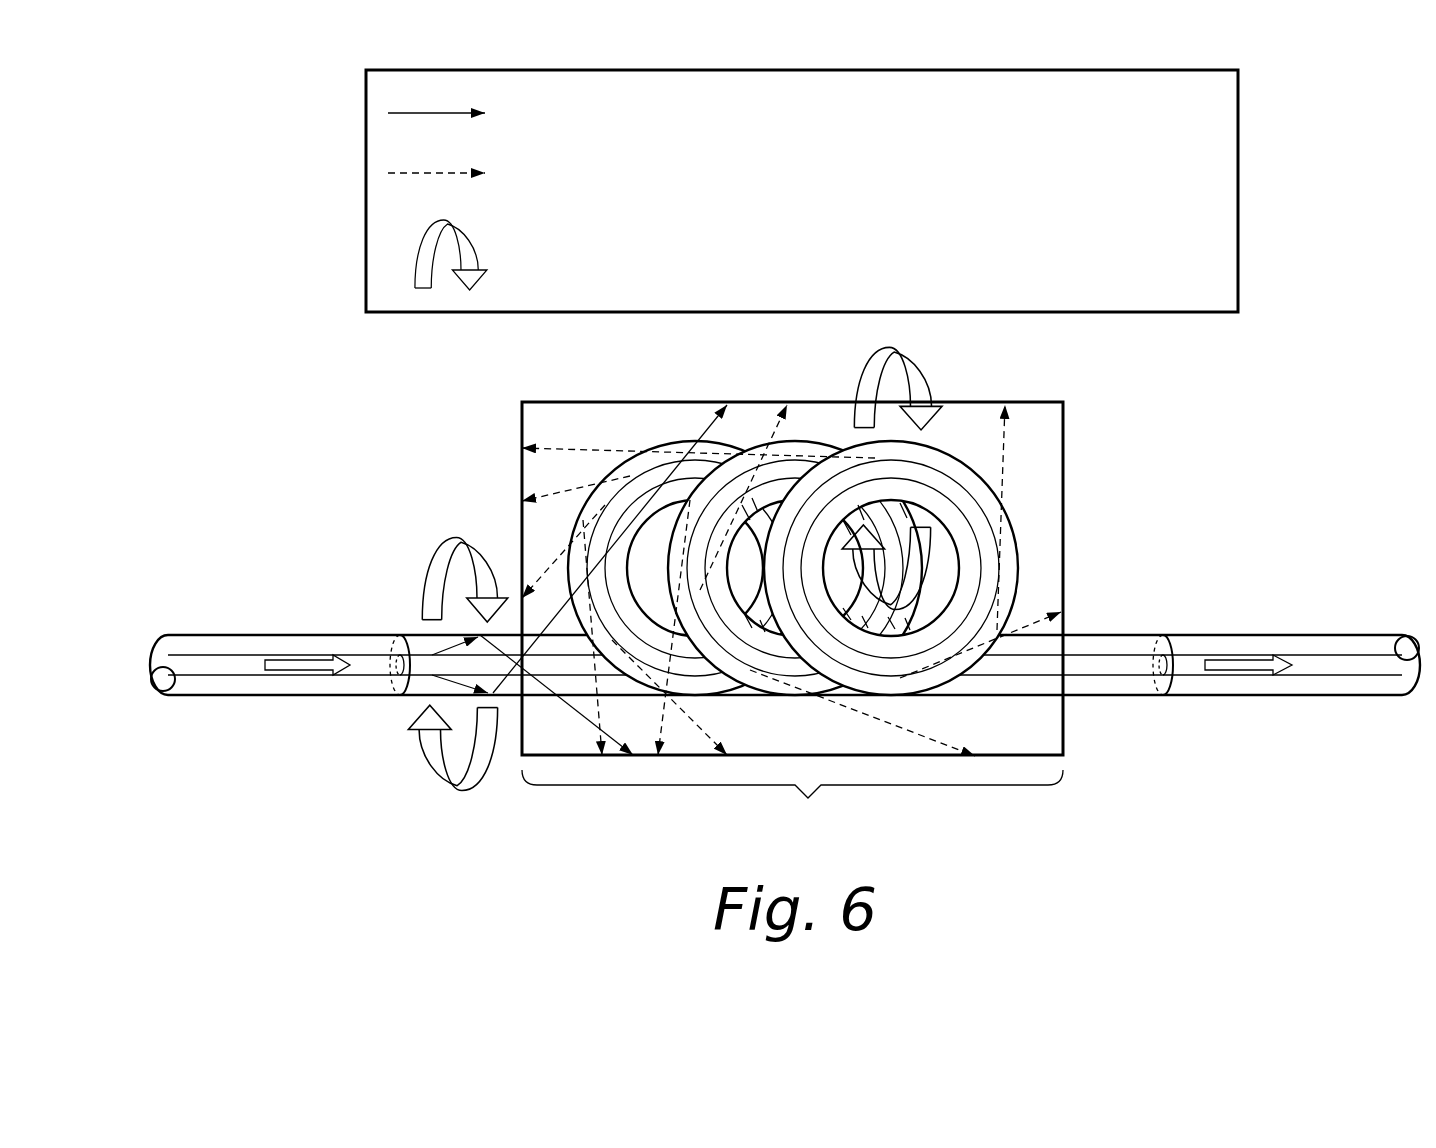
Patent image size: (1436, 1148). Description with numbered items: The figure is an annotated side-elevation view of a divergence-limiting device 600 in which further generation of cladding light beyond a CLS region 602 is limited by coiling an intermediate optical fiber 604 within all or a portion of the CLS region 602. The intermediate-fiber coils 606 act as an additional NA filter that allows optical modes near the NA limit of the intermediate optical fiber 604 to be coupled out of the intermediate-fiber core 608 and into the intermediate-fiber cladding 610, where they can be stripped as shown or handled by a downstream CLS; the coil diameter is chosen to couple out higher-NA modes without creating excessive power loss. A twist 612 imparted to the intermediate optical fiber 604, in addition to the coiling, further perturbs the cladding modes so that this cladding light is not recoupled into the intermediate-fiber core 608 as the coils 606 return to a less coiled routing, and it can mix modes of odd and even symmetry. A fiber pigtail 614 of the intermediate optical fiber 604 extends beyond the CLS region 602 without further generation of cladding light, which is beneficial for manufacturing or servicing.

The divergence-limiting device 600 is at (785, 477).
The CLS region 602 is at (823, 855).
The intermediate optical fiber 604 is at (410, 703).
The intermediate-fiber coils 606 is at (670, 430).
The intermediate-fiber core 608 is at (998, 570).
The intermediate-fiber cladding 610 is at (860, 521).
The twist 612 is at (421, 549).
The fiber pigtail 614 is at (1098, 700).